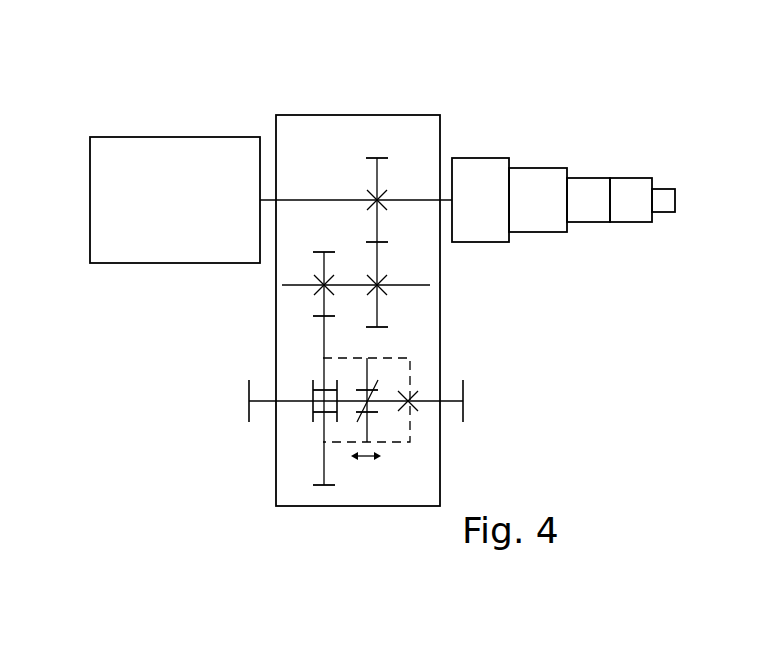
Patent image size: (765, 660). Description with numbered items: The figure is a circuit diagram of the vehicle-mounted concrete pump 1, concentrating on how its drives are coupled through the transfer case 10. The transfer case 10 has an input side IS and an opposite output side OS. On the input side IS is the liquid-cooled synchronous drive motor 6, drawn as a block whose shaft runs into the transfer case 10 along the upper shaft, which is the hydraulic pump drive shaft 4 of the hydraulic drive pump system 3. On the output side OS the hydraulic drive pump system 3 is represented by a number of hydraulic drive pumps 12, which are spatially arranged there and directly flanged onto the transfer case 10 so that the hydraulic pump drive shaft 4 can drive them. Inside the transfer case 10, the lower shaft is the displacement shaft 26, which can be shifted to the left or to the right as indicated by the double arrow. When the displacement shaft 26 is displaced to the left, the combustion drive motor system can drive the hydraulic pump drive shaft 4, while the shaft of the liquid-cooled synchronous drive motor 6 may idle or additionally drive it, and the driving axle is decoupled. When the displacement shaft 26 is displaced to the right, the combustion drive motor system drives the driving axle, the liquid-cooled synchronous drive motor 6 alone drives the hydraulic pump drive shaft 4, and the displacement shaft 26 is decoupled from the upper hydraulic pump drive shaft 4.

The vehicle-mounted concrete pump 1 is at (88, 86).
The hydraulic drive pump system 3 is at (630, 222).
The hydraulic pump drive shaft 4 is at (266, 200).
The liquid-cooled synchronous drive motor 6 is at (136, 263).
The transfer case 10 is at (341, 115).
The hydraulic drive pumps 12 is at (630, 178).
The displacement shaft 26 is at (262, 405).
The input side IS is at (276, 350).
The output side OS is at (440, 345).